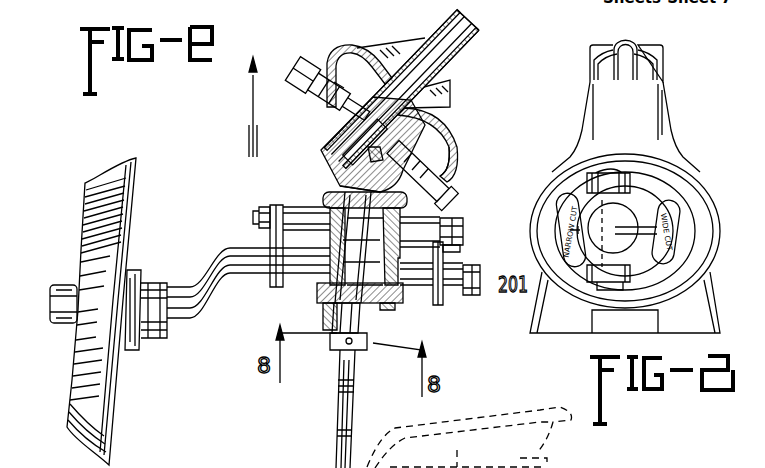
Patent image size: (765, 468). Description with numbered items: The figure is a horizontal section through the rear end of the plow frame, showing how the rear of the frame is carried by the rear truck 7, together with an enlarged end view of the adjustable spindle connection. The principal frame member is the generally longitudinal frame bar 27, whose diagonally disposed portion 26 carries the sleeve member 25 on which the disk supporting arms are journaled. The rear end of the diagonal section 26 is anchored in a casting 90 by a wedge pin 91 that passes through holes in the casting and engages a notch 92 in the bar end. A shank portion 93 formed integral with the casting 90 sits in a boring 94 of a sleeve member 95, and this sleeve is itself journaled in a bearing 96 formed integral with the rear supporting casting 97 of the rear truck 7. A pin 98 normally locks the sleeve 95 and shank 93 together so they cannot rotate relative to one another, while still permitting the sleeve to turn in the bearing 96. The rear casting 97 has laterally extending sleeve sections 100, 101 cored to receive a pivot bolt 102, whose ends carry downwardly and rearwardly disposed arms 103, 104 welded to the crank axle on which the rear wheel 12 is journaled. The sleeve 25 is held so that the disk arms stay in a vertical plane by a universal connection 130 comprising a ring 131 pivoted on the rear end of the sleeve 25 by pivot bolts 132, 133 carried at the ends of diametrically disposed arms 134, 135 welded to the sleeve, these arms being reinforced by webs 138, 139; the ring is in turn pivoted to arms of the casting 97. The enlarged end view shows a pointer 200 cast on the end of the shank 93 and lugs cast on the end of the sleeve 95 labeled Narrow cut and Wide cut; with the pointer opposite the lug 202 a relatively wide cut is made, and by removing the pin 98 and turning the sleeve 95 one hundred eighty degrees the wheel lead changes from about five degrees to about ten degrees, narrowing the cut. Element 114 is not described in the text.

In FIG. 6, the rear truck 7 is at (240, 283).
In FIG. 6, the rear wheel 12 is at (76, 383).
In FIG. 6, the sleeve member 25 is at (433, 44).
In FIG. 6, the diagonally disposed portion 26 is at (470, 33).
In FIG. 6, the frame bar 27 is at (479, 21).
In FIG. 6, the casting 90 is at (325, 150).
In FIG. 6, the wedge pin 91 is at (332, 172).
In FIG. 6, the notch 92 is at (345, 133).
In FIG. 6, the shank portion 93 is at (325, 298).
In FIG. 8, the shank portion 93 is at (622, 214).
In FIG. 6, the boring 94 is at (372, 308).
In FIG. 8, the boring 94 is at (592, 217).
In FIG. 6, the sleeve member 95 is at (395, 300).
In FIG. 8, the sleeve member 95 is at (663, 278).
In FIG. 6, the bearing 96 is at (440, 255).
In FIG. 6, the rear supporting casting 97 is at (317, 257).
In FIG. 6, the pin 98 is at (340, 328).
In FIG. 8, the pin 98 is at (615, 171).
In FIG. 6, the sleeve section 100 is at (293, 210).
In FIG. 6, the sleeve section 101 is at (427, 227).
In FIG. 8, the sleeve section 101 is at (577, 267).
In FIG. 6, the pivot bolt 102 is at (464, 230).
In FIG. 6, the arm 103 is at (278, 240).
In FIG. 6, the arm 104 is at (461, 248).
In FIG. 6, the end fitting 114 is at (480, 287).
In FIG. 6, the universal connection 130 is at (456, 171).
In FIG. 6, the ring 131 is at (346, 100).
In FIG. 6, the pivot bolt 132 is at (299, 61).
In FIG. 6, the pivot bolt 133 is at (452, 192).
In FIG. 6, the arm 134 is at (344, 46).
In FIG. 6, the arm 135 is at (453, 125).
In FIG. 6, the web 138 is at (394, 55).
In FIG. 6, the web 139 is at (452, 100).
In FIG. 8, the pointer 200 is at (613, 233).
In FIG. 8, the lug 202 is at (647, 237).